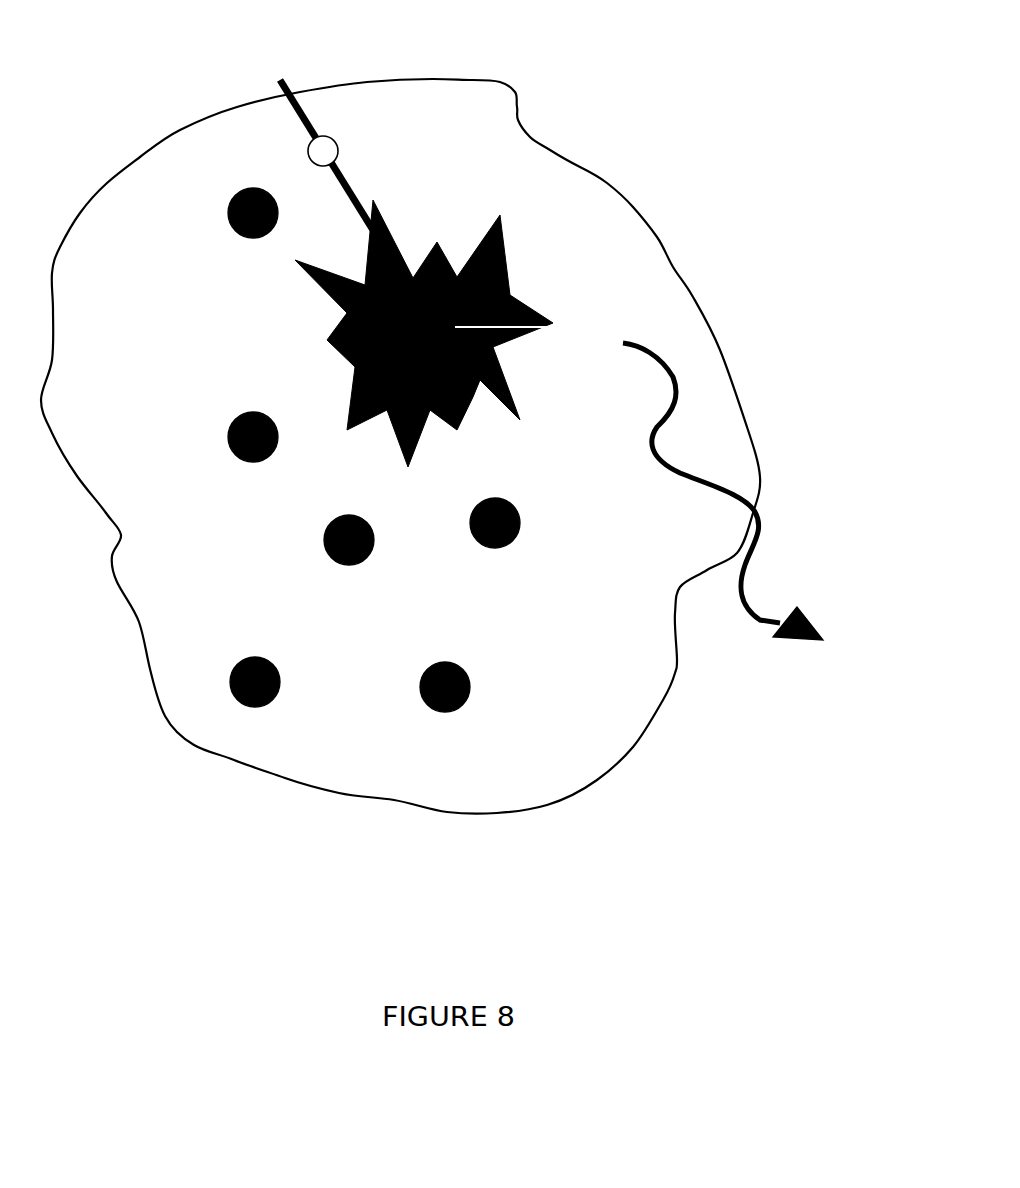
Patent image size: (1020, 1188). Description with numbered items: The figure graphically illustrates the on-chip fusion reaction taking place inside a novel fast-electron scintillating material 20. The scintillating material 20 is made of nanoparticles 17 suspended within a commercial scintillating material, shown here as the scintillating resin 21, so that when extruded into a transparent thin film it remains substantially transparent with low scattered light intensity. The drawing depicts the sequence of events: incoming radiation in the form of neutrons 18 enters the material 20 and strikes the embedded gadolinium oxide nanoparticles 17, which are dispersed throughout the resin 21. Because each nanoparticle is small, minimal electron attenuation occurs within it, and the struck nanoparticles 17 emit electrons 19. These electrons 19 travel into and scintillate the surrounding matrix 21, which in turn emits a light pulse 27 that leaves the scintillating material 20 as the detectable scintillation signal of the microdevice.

The nanoparticles 17 is at (495, 302).
The neutrons 18 is at (307, 117).
The electrons 19 is at (622, 338).
The fast-electron scintillating material 20 is at (603, 185).
The scintillating resin 21 is at (717, 448).
The light pulse 27 is at (748, 598).